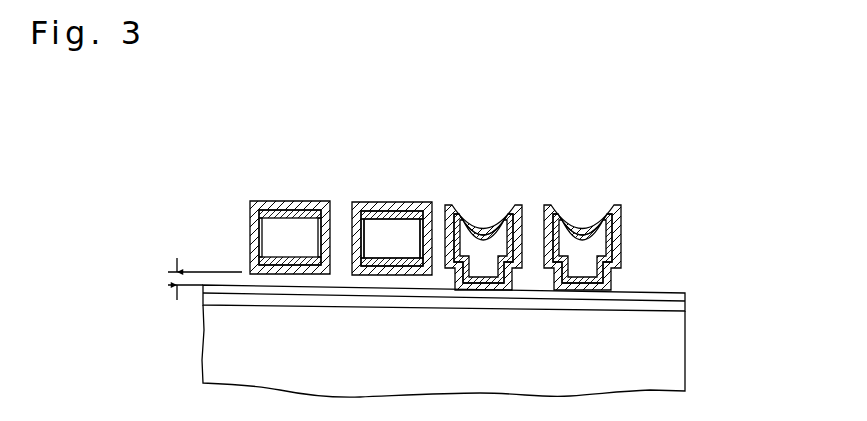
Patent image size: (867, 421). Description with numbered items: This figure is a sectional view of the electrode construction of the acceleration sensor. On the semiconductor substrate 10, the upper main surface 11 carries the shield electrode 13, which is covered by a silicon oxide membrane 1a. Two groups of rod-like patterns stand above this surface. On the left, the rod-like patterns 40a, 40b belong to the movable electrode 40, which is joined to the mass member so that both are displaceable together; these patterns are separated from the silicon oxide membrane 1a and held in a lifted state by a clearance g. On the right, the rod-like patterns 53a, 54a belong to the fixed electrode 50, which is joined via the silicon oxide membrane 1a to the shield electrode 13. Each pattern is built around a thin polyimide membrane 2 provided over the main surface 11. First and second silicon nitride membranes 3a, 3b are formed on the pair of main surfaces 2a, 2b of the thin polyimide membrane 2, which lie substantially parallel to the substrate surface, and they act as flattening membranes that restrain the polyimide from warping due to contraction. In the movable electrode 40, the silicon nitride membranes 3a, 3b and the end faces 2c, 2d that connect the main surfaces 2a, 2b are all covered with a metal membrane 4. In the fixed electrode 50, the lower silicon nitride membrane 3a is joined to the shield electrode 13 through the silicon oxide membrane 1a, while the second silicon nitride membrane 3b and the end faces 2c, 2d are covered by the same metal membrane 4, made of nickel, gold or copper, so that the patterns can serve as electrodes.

The movable electrode 40 is at (282, 128).
The rod-like pattern of the movable electrode 40a is at (285, 201).
The rod-like pattern of the movable electrode 40b is at (396, 202).
The fixed electrode 50 is at (488, 134).
The rod-like pattern of the fixed electrode 53a is at (486, 212).
The rod-like pattern of the fixed electrode 54a is at (585, 216).
The thin polyimide membrane 2 is at (313, 208).
The main surface of the thin polyimide membrane 2a is at (261, 240).
The main surface of the thin polyimide membrane 2b is at (266, 218).
The end face of the thin polyimide membrane 2c is at (358, 246).
The end face of the thin polyimide membrane 2d is at (420, 229).
The first silicon nitride membrane 3a is at (261, 261).
The second silicon nitride membrane 3b is at (254, 212).
The metal membrane 4 is at (261, 201).
The semiconductor substrate 10 is at (680, 358).
The upper main surface of the semiconductor substrate 11 is at (678, 292).
The shield electrode 13 is at (682, 310).
The silicon oxide membrane 1a is at (688, 297).
The clearance g is at (202, 271).